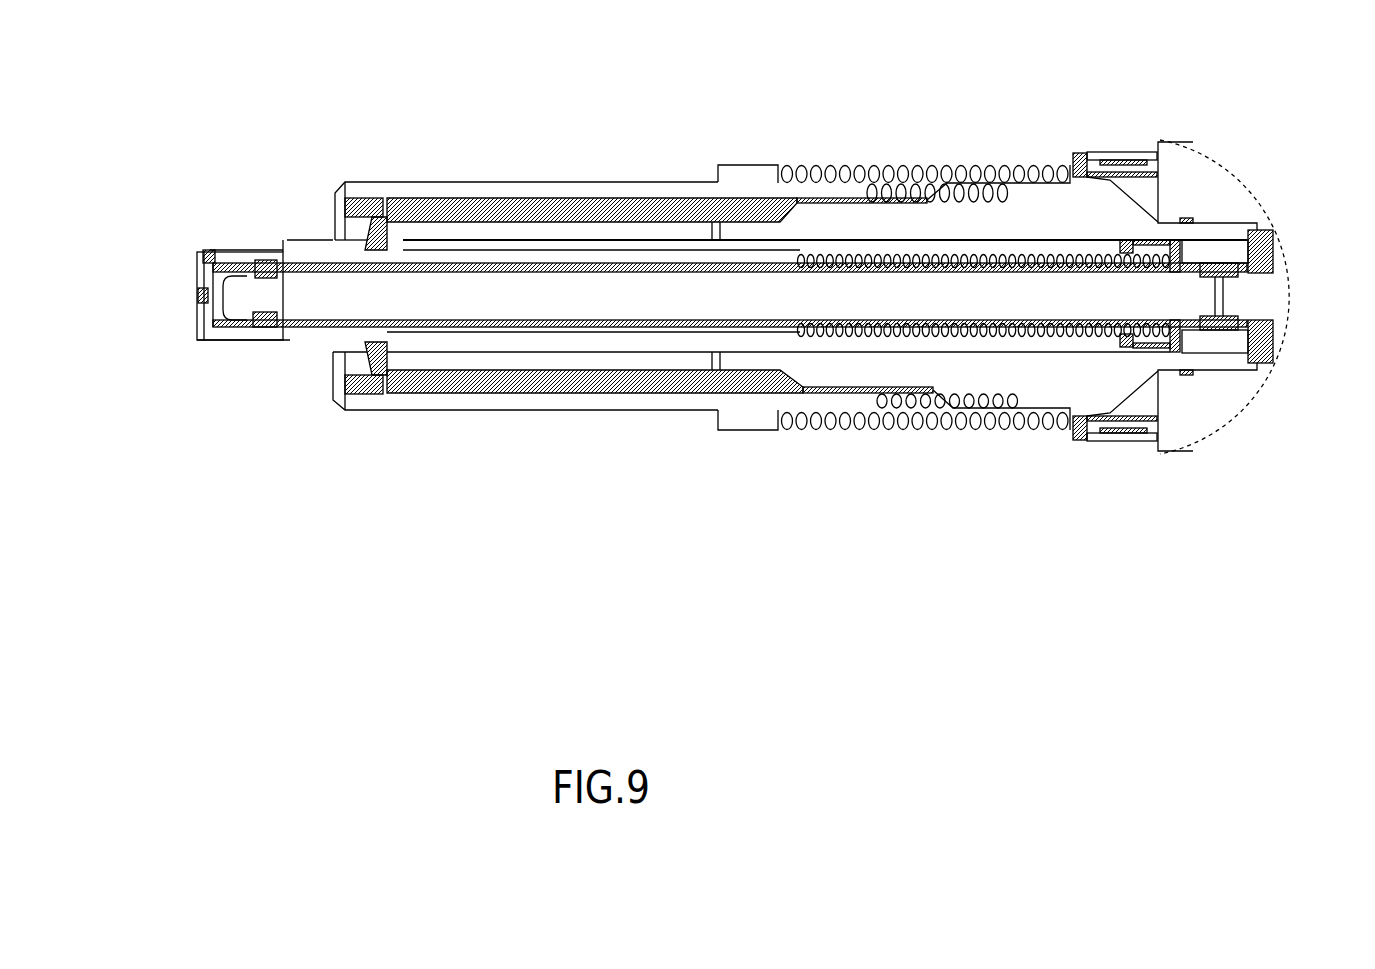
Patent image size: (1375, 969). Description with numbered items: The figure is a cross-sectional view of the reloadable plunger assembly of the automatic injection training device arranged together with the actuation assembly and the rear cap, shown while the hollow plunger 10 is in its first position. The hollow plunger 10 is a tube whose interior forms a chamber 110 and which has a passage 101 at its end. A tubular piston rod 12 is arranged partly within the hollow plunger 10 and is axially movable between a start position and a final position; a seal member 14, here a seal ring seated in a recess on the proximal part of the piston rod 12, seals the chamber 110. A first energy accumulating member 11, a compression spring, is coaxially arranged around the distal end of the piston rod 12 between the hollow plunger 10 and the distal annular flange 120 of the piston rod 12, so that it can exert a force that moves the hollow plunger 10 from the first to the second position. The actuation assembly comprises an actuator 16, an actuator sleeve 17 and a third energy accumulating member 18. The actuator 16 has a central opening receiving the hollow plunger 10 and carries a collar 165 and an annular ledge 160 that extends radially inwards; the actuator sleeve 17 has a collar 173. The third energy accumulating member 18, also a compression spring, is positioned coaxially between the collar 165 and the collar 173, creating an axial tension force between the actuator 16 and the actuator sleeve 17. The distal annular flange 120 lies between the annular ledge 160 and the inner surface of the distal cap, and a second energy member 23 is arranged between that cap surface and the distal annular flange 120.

The hollow plunger 10 is at (203, 250).
The first energy accumulating member 11 is at (957, 253).
The piston rod 12 is at (482, 292).
The seal member 14 is at (262, 260).
The actuator 16 is at (1045, 370).
The actuator sleeve 17 is at (413, 395).
The third energy accumulating member 18 is at (885, 425).
The second energy member 23 is at (1220, 274).
The passage 101 is at (178, 305).
The chamber 110 is at (227, 318).
The distal annular flange 120 is at (1175, 253).
The annular ledge 160 is at (1127, 240).
The collar 165 is at (1073, 423).
The collar 173 is at (778, 423).